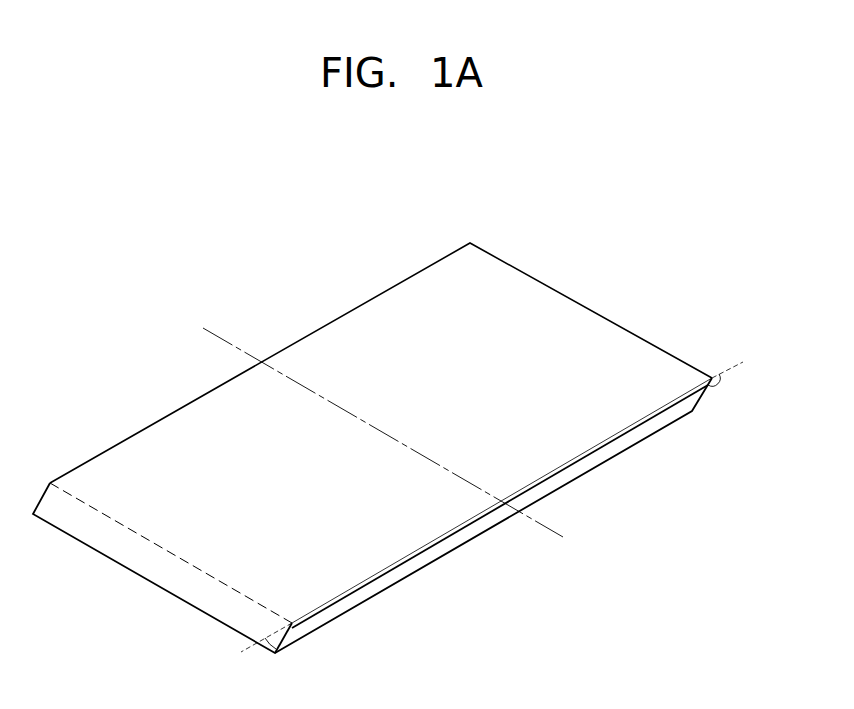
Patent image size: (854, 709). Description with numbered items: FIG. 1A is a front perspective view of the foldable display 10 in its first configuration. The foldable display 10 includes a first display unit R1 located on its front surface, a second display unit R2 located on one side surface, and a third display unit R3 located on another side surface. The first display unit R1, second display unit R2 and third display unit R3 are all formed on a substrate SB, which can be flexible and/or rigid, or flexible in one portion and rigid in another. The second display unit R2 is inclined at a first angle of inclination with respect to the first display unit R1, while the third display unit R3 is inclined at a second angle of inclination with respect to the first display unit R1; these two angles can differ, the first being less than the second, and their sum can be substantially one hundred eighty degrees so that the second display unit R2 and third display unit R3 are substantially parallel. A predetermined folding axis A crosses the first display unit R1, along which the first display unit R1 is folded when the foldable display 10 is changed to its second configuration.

The foldable display 10 is at (619, 284).
The first display unit R1 is at (381, 433).
The second display unit R2 is at (162, 568).
The third display unit R3 is at (702, 396).
The substrate SB is at (622, 446).
The folding axis A is at (550, 530).